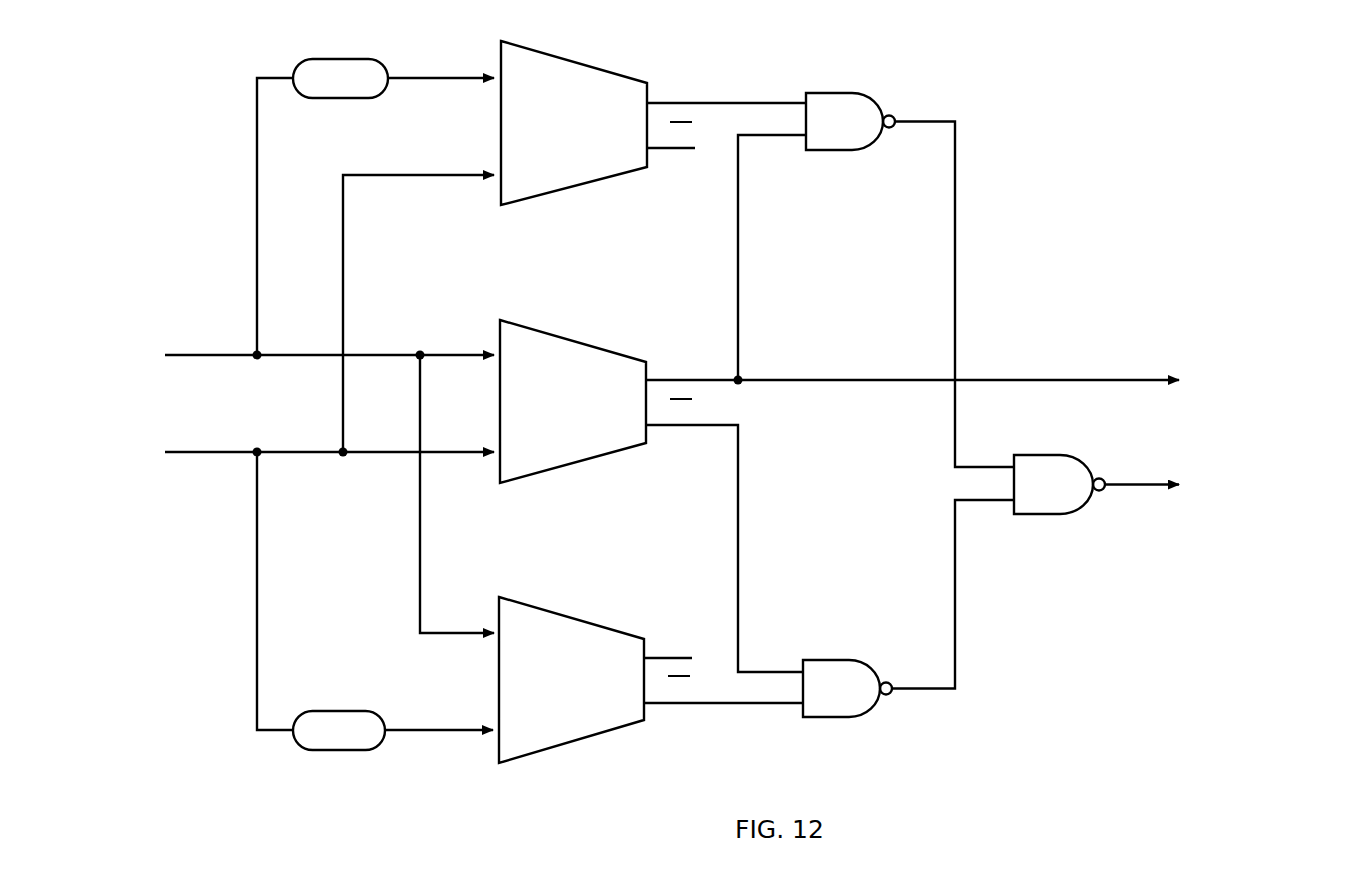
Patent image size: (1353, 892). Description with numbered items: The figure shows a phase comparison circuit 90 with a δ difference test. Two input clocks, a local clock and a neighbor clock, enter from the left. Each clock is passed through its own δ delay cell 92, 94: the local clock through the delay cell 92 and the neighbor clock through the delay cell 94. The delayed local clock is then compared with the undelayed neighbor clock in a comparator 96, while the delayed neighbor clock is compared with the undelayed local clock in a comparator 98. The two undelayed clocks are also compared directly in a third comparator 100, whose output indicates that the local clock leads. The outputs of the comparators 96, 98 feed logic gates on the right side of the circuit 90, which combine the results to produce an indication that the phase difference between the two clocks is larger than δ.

The phase comparison circuit 90 is at (705, 421).
The δ delay cell 92 is at (345, 98).
The δ delay cell 94 is at (345, 750).
The comparator 96 is at (583, 182).
The comparator 98 is at (580, 738).
The comparator 100 is at (580, 460).